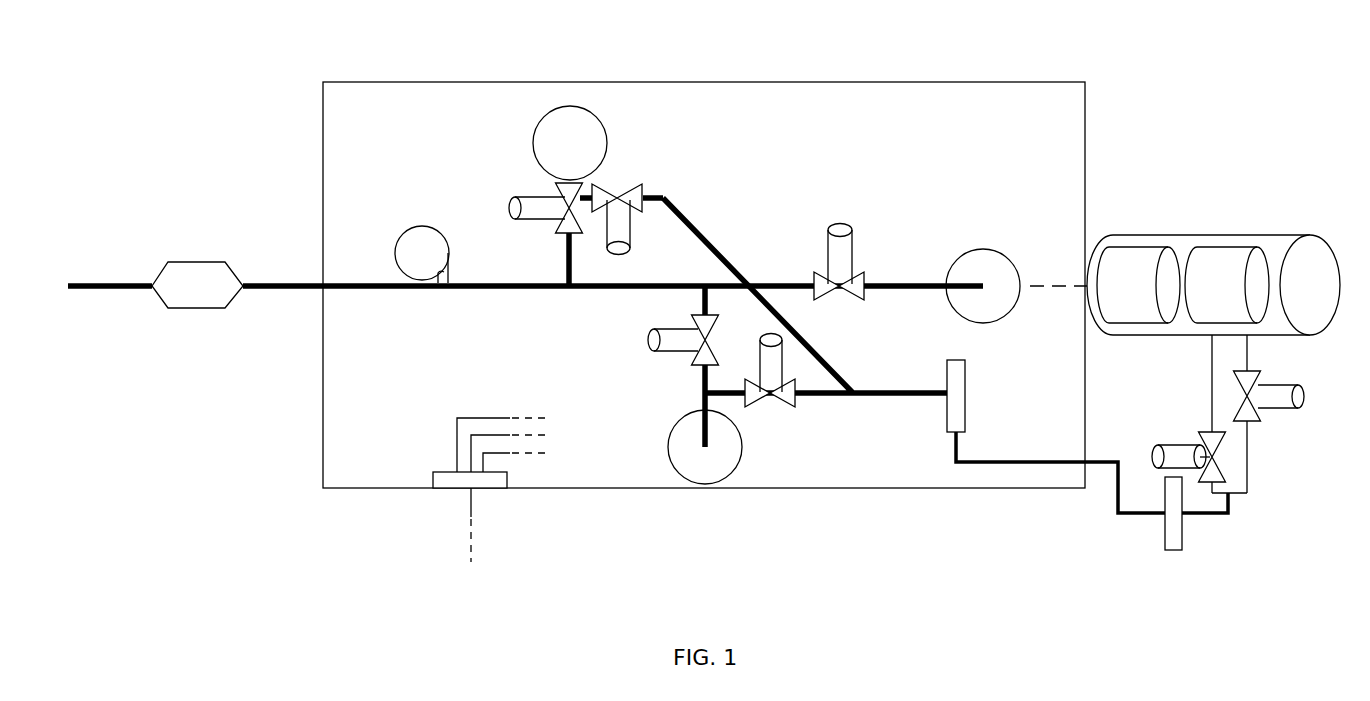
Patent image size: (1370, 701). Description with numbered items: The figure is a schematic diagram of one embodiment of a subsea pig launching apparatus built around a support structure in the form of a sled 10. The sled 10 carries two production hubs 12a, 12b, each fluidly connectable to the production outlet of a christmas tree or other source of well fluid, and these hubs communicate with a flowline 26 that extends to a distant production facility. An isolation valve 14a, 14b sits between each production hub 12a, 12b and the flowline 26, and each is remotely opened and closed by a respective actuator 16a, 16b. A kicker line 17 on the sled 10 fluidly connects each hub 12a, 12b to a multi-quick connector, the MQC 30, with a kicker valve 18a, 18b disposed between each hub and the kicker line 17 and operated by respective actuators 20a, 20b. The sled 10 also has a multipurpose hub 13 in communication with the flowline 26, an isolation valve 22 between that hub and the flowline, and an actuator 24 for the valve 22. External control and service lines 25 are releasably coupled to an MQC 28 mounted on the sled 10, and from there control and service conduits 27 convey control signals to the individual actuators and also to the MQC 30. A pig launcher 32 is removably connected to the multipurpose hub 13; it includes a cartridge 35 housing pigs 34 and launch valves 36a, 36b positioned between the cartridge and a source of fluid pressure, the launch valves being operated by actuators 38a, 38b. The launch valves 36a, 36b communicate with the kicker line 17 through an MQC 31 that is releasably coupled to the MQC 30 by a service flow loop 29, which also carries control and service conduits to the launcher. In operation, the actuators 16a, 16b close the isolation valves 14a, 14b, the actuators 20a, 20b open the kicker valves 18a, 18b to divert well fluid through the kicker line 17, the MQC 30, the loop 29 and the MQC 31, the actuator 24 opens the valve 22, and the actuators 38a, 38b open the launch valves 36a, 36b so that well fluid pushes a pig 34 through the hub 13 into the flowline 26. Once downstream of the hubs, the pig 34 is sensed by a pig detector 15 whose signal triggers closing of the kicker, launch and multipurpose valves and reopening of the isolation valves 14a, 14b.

The sled 10 is at (751, 82).
The production hub 12a is at (541, 118).
The production hub 12b is at (670, 440).
The multipurpose hub 13 is at (1000, 253).
The isolation valve 14a is at (556, 226).
The isolation valve 14b is at (692, 362).
The pig detector 15 is at (404, 232).
The actuator 16a is at (512, 200).
The actuator 16b is at (650, 333).
The kicker line 17 is at (898, 397).
The kicker valve 18a is at (646, 190).
The kicker valve 18b is at (774, 412).
The actuator 20a is at (634, 245).
The actuator 20b is at (784, 360).
The isolation valve 22 is at (858, 274).
The actuator 24 is at (845, 231).
The control and service lines 25 is at (463, 516).
The flowline 26 is at (392, 290).
The control and service conduits 27 is at (535, 465).
The MQC 28 is at (435, 472).
The service flow loop 29 is at (1100, 465).
The MQC 30 is at (958, 361).
The MQC 31 is at (1176, 551).
The pig launcher 32 is at (1240, 233).
The pigs 34 is at (1225, 247).
The cartridge 35 is at (1305, 237).
The launch valve 36a is at (1228, 470).
The launch valve 36b is at (1262, 416).
The actuator 38a is at (1178, 444).
The actuator 38b is at (1292, 383).